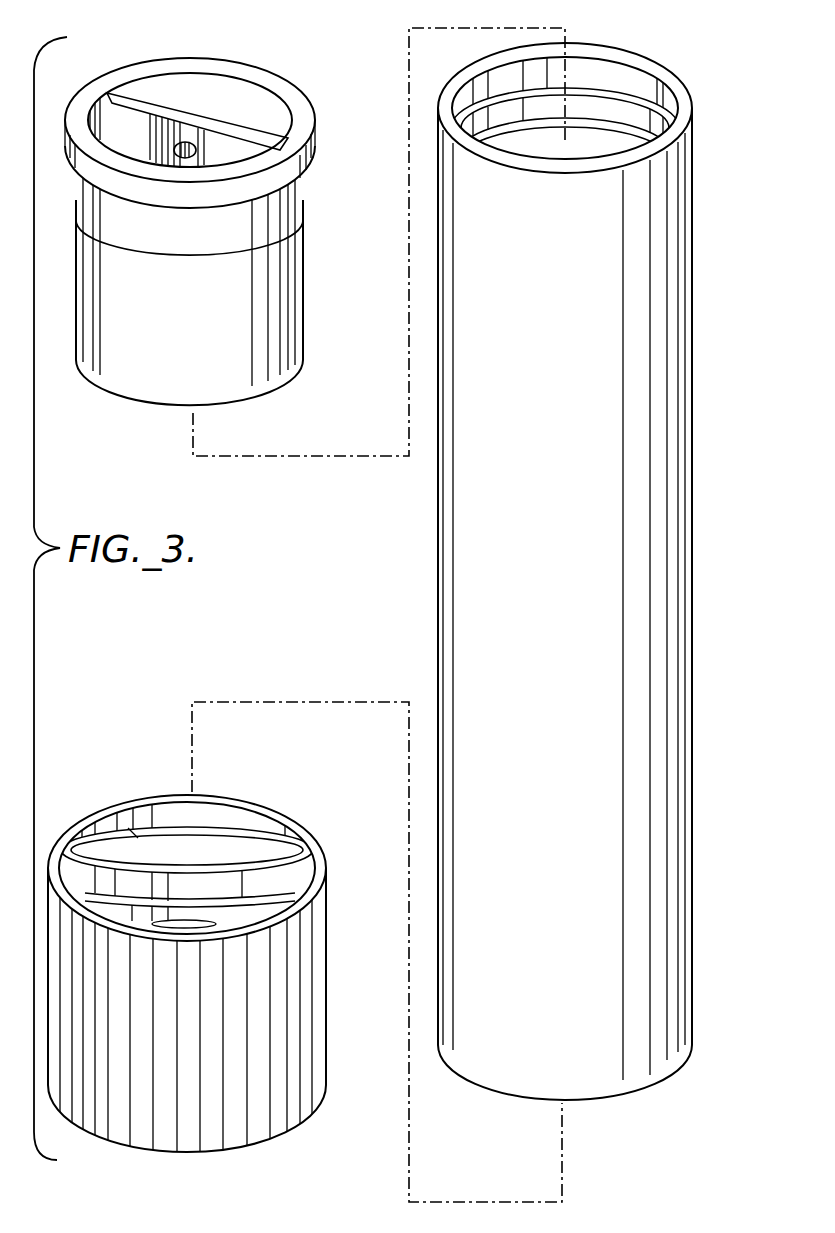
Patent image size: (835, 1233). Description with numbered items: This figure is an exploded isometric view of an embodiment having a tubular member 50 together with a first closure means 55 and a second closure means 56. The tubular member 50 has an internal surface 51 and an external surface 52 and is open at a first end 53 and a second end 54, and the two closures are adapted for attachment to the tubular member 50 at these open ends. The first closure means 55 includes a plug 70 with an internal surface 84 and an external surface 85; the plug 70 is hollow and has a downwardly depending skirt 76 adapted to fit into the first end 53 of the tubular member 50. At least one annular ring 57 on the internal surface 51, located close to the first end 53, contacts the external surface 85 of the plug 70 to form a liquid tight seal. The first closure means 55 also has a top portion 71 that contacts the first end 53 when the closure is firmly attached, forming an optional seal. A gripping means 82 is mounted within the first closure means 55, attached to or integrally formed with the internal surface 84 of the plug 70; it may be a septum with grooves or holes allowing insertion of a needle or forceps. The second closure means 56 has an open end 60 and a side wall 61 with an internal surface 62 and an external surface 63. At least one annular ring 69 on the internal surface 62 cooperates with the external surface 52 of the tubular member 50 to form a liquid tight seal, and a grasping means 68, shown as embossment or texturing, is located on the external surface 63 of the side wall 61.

The tubular member 50 is at (434, 568).
The internal surface 51 is at (664, 103).
The external surface 52 is at (692, 355).
The first end 53 is at (600, 70).
The second end 54 is at (630, 1094).
The first closure means 55 is at (306, 289).
The second closure means 56 is at (330, 880).
The annular ring 57 is at (620, 128).
The open end 60 is at (255, 850).
The side wall 61 is at (328, 990).
The internal surface 62 is at (220, 833).
The external surface 63 is at (327, 935).
The grasping means 68 is at (270, 1102).
The annular ring 69 is at (147, 832).
The plug 70 is at (306, 341).
The top portion 71 is at (305, 117).
The skirt 76 is at (298, 258).
The gripping means 82 is at (107, 115).
The internal surface 84 is at (162, 80).
The external surface 85 is at (303, 227).